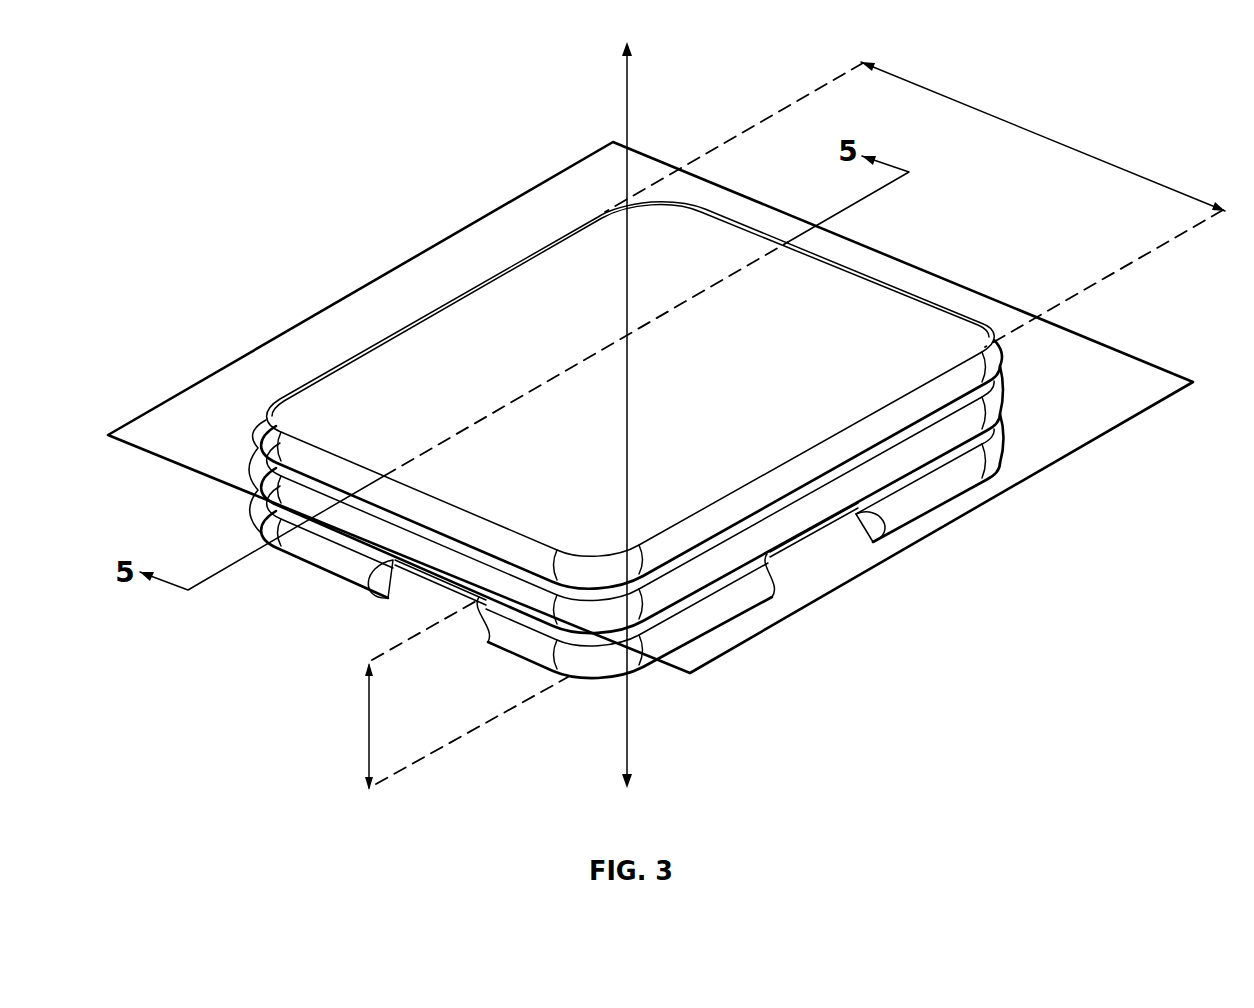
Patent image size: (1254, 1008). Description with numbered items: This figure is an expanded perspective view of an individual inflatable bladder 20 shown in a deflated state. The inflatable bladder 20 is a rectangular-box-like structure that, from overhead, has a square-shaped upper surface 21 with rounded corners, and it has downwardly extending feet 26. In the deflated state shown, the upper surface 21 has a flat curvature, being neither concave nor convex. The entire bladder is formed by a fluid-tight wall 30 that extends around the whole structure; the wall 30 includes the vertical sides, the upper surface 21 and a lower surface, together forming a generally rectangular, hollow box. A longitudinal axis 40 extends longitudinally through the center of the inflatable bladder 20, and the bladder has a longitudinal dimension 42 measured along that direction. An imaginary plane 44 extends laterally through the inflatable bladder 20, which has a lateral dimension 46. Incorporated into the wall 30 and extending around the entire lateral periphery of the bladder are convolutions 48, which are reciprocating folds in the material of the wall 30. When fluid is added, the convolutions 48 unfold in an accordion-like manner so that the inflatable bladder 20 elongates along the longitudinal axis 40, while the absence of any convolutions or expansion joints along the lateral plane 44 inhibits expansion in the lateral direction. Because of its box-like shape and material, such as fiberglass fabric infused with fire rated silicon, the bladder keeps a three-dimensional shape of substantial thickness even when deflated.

The inflatable bladder 20 is at (185, 113).
The upper surface 21 is at (514, 333).
The feet 26 is at (948, 488).
The wall 30 is at (905, 287).
The longitudinal axis 40 is at (627, 92).
The longitudinal dimension 42 is at (368, 722).
The imaginary plane 44 is at (1128, 418).
The lateral dimension 46 is at (1023, 125).
The convolutions 48 is at (247, 480).